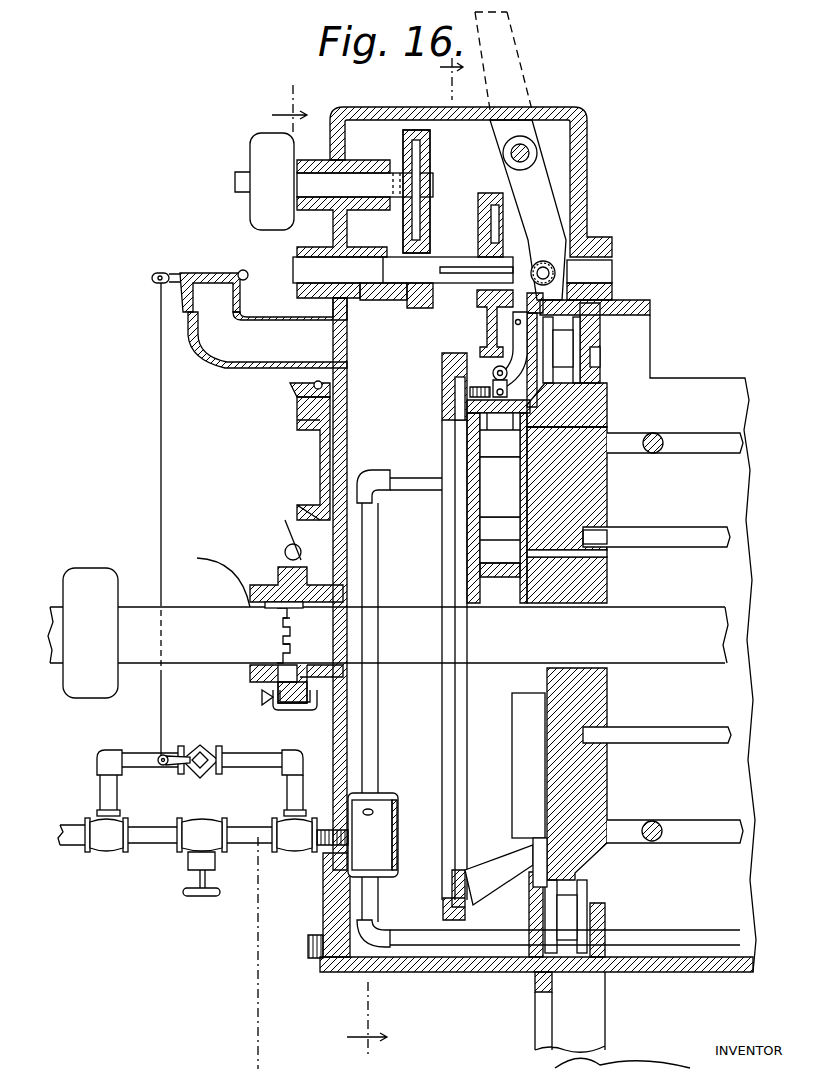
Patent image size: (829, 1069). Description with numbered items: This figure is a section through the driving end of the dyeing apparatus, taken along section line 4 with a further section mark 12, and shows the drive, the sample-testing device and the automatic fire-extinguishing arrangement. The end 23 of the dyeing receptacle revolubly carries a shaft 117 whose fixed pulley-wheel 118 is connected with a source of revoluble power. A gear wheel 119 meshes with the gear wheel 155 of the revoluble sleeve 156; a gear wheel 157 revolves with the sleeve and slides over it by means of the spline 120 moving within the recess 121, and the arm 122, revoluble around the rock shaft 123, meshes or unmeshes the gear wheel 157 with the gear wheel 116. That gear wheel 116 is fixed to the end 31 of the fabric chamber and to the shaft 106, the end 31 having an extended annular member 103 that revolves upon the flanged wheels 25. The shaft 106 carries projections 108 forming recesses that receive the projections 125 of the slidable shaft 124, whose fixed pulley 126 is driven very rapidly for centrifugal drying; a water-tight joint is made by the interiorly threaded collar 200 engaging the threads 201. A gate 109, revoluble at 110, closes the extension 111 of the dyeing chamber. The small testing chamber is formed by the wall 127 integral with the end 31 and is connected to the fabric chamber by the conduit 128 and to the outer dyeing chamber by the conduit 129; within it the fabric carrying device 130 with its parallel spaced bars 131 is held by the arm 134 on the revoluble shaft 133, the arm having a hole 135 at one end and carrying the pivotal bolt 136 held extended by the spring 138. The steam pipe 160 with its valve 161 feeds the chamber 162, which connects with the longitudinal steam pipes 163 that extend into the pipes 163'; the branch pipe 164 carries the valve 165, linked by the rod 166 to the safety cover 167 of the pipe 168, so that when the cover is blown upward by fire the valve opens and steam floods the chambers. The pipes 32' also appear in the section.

The section line 4- 4 is at (394, 558).
The section line 12- 12 is at (282, 567).
The end 23 is at (348, 432).
The revoluble flanged wheels 25 is at (580, 902).
The end 31 is at (607, 486).
The pipe 32' is at (663, 638).
The extended annular member 103 is at (578, 392).
The shaft 106 is at (659, 620).
The projections 108 is at (275, 650).
The gate 109 is at (300, 450).
The pivot of gate 110 is at (285, 548).
The extension 111 is at (330, 672).
The gear wheel 116 is at (460, 716).
The shaft 117 is at (356, 178).
The fixed pulley-wheel 118 is at (248, 172).
The gear wheel 119 is at (422, 145).
The spline 120 is at (549, 274).
The recess 121 is at (456, 266).
The arm 122 is at (524, 72).
The rock shaft 123 is at (530, 148).
The slidable shaft 124 is at (201, 608).
The projections 125 is at (292, 630).
The fixed pulley 126 is at (106, 576).
The wall 127 is at (470, 545).
The conduit 128 is at (600, 554).
The conduit 129 is at (590, 426).
The fabric carrying device 130 is at (470, 562).
The parallel spaced bars 131 is at (505, 522).
The revoluble shaft 133 is at (470, 388).
The arm 134 is at (478, 338).
The hole 135 is at (575, 284).
The pivotal bolt 136 is at (442, 378).
The spring 138 is at (467, 410).
The gear wheel 155 is at (396, 306).
The revoluble sleeve 156 is at (462, 289).
The gear wheel 157 is at (478, 200).
The steam pipe 160 is at (70, 830).
The valve 161 is at (199, 824).
The chamber 162 is at (373, 835).
The steam pipes 163 is at (392, 708).
The pipes 163' is at (565, 711).
The branch pipe 164 is at (245, 752).
The valve 165 is at (205, 748).
The rod 166 is at (158, 432).
The safety cover 167 is at (174, 278).
The pipe 168 is at (262, 327).
The interiorly threaded collar 200 is at (250, 590).
The threads 201 is at (212, 561).